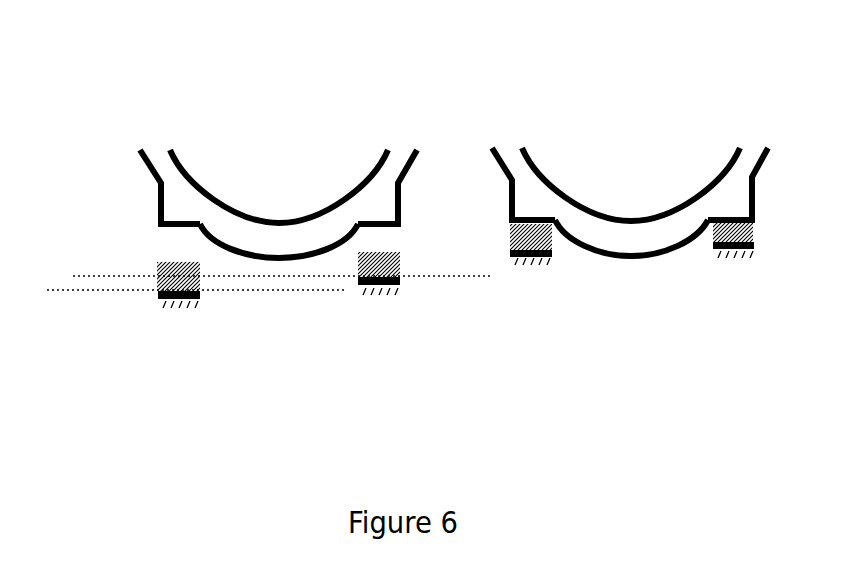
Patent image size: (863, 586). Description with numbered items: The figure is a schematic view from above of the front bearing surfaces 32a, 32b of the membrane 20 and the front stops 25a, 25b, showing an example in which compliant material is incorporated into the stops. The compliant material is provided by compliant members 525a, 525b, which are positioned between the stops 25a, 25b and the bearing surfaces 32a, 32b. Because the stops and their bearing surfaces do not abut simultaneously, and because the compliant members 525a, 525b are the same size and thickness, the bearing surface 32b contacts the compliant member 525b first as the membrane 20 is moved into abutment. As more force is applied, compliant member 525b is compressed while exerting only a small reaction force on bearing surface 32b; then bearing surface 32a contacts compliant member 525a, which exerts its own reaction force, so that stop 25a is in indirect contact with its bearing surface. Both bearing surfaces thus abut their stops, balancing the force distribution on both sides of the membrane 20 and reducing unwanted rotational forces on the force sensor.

The membrane 20 is at (520, 137).
The bearing surface 32a is at (150, 216).
The bearing surface 32b is at (768, 216).
The compliant member 525a is at (150, 298).
The compliant member 525b is at (402, 276).
The front stop 25a is at (200, 305).
The front stop 25b is at (718, 258).